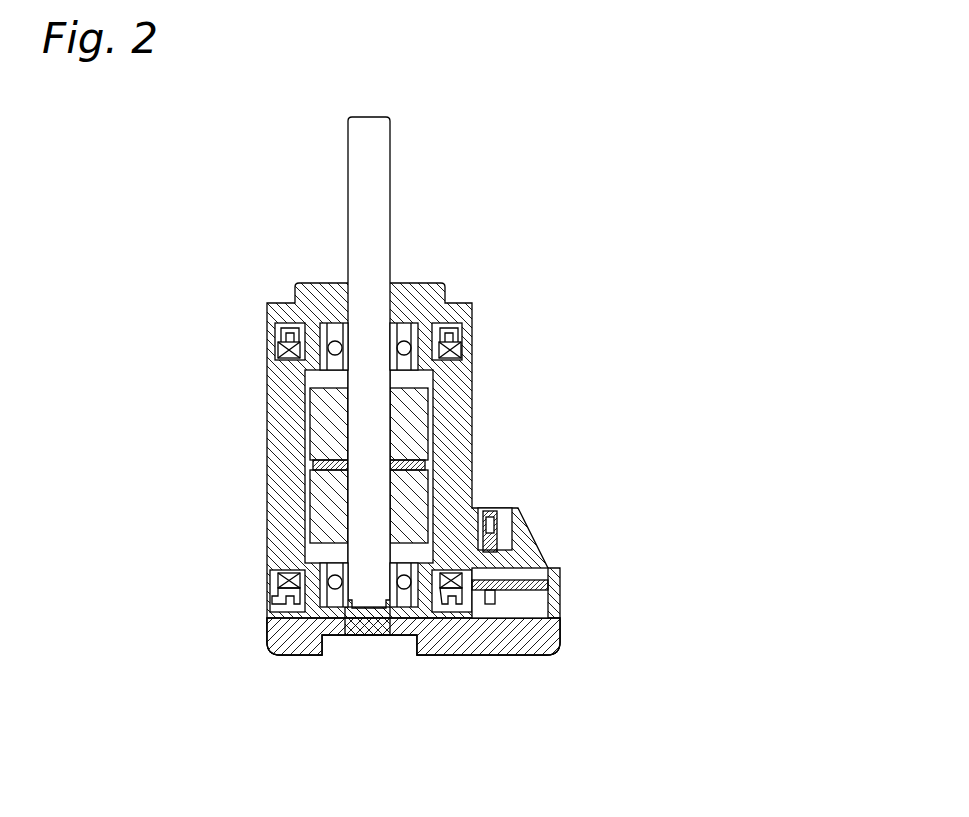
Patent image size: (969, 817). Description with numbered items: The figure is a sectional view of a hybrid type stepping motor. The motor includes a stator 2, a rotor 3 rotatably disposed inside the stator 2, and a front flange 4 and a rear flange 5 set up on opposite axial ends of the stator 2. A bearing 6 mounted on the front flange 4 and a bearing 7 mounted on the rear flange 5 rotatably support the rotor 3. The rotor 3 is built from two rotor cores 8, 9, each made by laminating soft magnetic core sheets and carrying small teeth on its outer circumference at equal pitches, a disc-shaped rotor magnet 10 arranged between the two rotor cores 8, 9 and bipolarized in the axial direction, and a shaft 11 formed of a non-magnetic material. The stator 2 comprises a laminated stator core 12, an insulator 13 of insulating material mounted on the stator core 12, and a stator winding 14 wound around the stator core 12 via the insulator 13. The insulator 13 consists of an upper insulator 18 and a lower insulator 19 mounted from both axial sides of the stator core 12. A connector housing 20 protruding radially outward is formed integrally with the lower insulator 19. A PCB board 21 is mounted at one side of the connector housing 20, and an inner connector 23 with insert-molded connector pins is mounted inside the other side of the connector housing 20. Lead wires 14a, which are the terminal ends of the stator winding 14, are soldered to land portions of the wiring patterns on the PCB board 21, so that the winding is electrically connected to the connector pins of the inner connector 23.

The stator 2 is at (770, 102).
The rotor 3 is at (770, 583).
The front flange 4 is at (312, 298).
The rear flange 5 is at (427, 630).
The bearing 6 is at (404, 342).
The bearing 7 is at (335, 596).
The rotor core 8 is at (327, 403).
The rotor core 9 is at (327, 510).
The rotor magnet 10 is at (332, 459).
The shaft 11 is at (365, 603).
The stator core 12 is at (457, 438).
The insulator 13 is at (770, 368).
The stator winding 14 is at (280, 576).
The lead wire 14a is at (490, 604).
The upper insulator 18 is at (268, 348).
The lower insulator 19 is at (275, 588).
The connector housing 20 is at (532, 561).
The PCB board 21 is at (512, 590).
The inner connector 23 is at (505, 562).